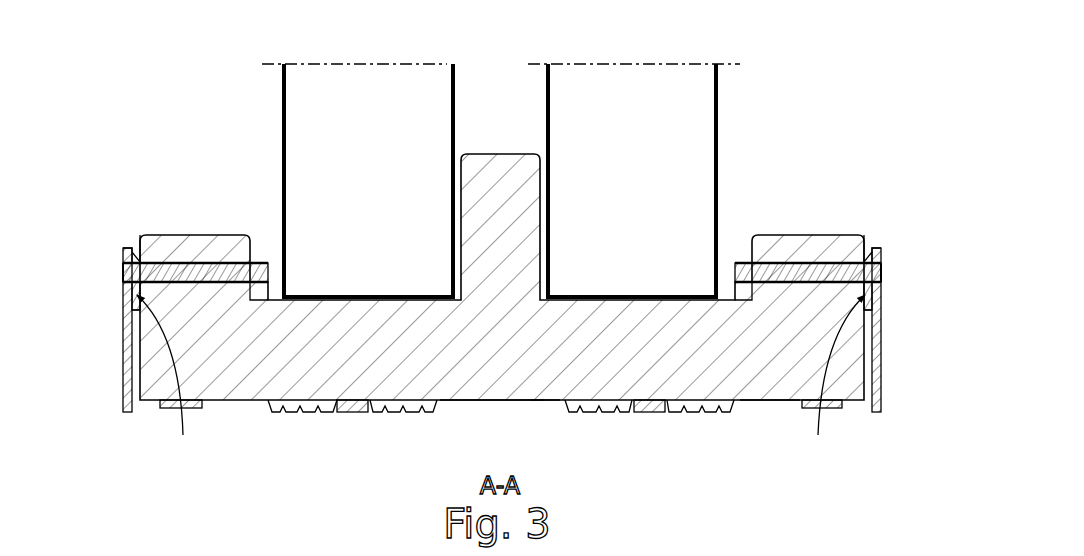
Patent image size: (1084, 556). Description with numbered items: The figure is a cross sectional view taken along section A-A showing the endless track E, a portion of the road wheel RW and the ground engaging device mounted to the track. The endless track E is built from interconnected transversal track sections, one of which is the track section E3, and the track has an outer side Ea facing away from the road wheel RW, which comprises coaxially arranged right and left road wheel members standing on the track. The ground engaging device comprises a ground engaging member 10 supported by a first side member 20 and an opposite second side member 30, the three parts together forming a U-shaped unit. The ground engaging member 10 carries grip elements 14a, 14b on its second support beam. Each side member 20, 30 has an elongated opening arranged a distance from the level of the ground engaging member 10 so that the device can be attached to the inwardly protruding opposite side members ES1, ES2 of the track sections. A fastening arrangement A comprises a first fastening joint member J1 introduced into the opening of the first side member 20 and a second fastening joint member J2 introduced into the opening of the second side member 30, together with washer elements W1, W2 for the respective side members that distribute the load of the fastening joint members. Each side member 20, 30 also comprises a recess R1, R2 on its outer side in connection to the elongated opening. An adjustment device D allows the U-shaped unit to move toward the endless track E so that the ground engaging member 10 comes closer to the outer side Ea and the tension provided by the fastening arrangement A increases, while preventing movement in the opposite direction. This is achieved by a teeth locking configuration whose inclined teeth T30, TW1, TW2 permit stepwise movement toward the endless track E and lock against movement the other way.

The ground engaging member 10 is at (392, 418).
The grip element 14a is at (317, 413).
The grip element 14b is at (656, 413).
The road wheel RW is at (456, 95).
The second side member 30 is at (121, 372).
The first side member 20 is at (883, 365).
The second fastening joint member J2 is at (183, 262).
The first fastening joint member J1 is at (797, 262).
The teeth T30 is at (124, 305).
The inwardly protruding side member of the endless track ES2 is at (252, 236).
The inwardly protruding side member of the endless track ES1 is at (750, 236).
The washer element W2 is at (128, 248).
The washer element W1 is at (878, 248).
The teeth TW2 is at (134, 258).
The teeth TW1 is at (868, 258).
The fastening arrangement A is at (121, 278).
The second recess R2 is at (123, 318).
The first recess R1 is at (878, 318).
The adjustment device D is at (501, 380).
The endless track E is at (490, 404).
The outer side of the endless track Ea is at (535, 401).
The track section E3 is at (763, 404).